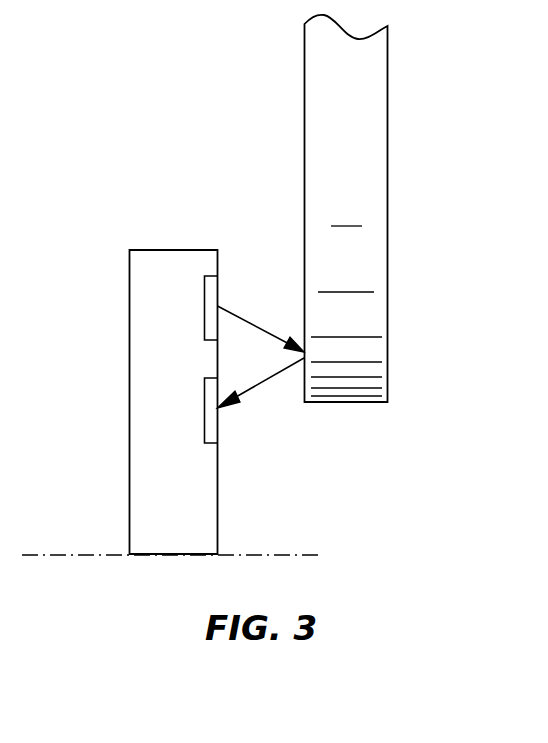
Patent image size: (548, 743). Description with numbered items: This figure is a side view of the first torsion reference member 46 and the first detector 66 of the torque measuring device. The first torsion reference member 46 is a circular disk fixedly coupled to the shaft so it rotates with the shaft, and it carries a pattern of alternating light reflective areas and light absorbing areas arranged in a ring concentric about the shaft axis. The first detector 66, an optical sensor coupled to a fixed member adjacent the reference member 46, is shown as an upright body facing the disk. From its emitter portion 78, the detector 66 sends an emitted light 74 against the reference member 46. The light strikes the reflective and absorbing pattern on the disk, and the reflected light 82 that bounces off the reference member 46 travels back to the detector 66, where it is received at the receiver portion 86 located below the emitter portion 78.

The first torsion reference member 46 is at (367, 176).
The first detector 66 is at (163, 509).
The emitted light 74 is at (251, 328).
The emitter portion 78 is at (208, 300).
The reflected light 82 is at (265, 382).
The receiver portion 86 is at (208, 402).